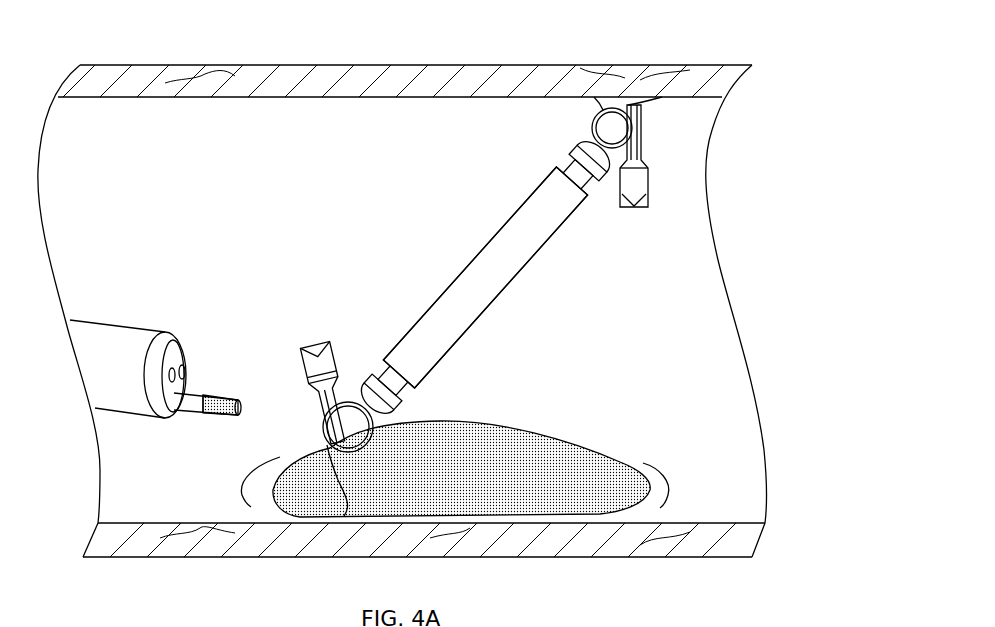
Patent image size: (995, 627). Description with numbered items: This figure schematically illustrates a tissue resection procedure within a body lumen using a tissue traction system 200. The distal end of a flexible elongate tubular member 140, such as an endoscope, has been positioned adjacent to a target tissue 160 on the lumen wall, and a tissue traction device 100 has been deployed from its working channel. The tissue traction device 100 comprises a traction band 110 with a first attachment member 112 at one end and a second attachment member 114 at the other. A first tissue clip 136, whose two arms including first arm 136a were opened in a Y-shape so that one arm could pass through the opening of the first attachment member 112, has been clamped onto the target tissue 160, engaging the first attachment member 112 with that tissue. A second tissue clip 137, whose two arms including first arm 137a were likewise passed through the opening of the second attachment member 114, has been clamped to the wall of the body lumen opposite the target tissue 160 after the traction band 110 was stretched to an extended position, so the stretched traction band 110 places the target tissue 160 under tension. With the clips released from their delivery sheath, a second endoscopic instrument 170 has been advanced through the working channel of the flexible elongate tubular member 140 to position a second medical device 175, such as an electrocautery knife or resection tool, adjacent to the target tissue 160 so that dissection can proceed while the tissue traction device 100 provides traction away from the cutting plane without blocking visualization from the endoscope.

The tissue traction device 100 is at (446, 224).
The traction band 110 is at (515, 273).
The first attachment member 112 is at (350, 403).
The second attachment member 114 is at (598, 108).
The first tissue clip 136 is at (308, 340).
The first arm of first tissue clip 136a is at (327, 400).
The second tissue clip 137 is at (640, 212).
The first arm of second tissue clip 137a is at (648, 127).
The flexible elongate tubular member 140 is at (135, 340).
The target tissue 160 is at (513, 440).
The second endoscopic instrument 170 is at (187, 390).
The second medical device 175 is at (225, 398).
The tissue traction system 200 is at (124, 180).